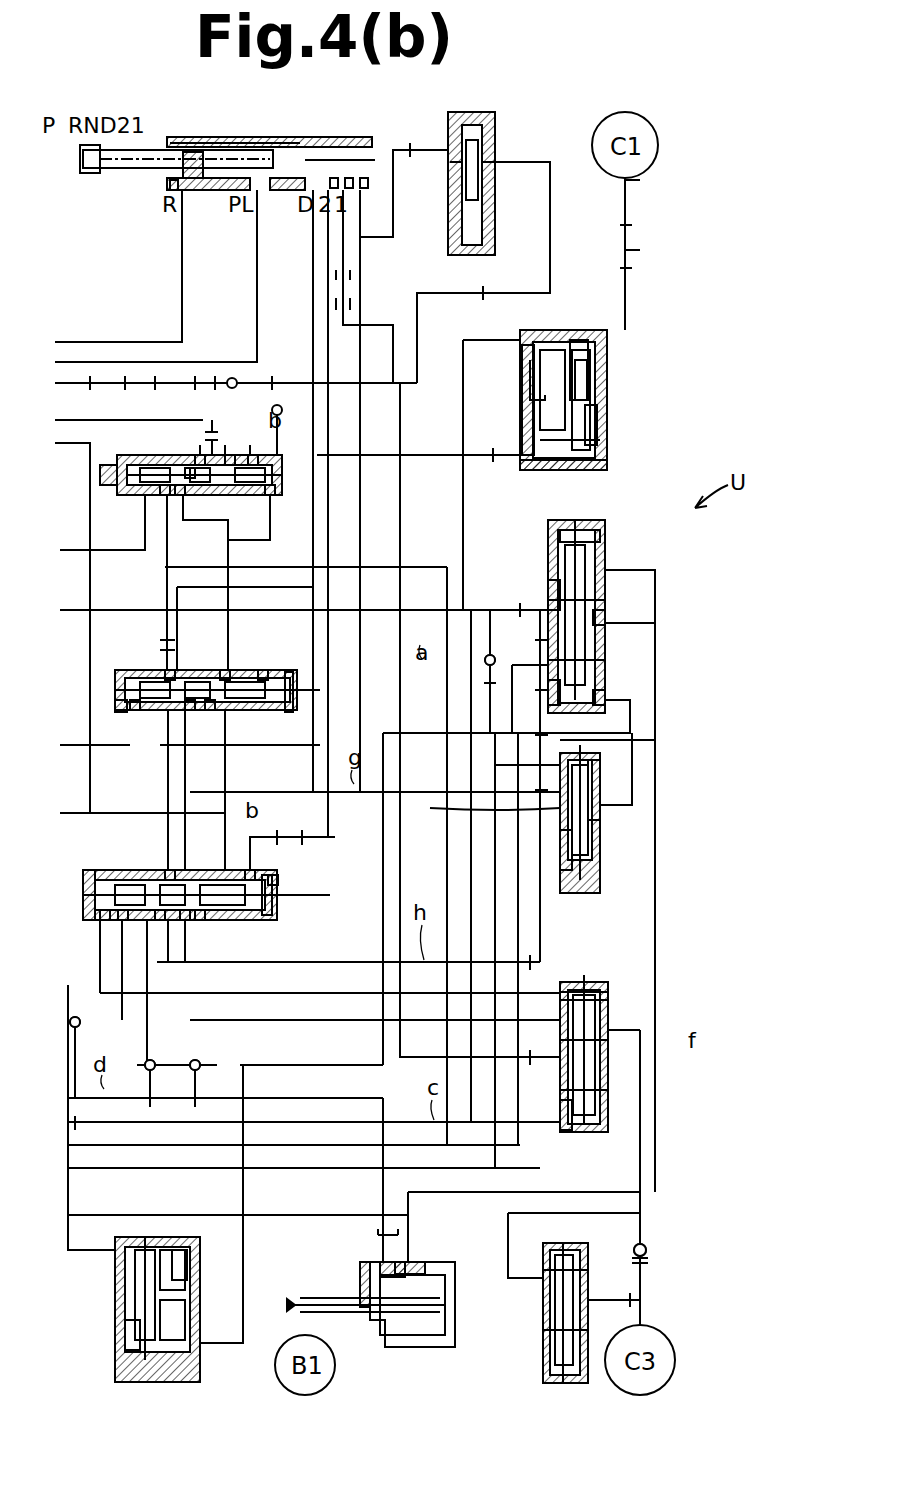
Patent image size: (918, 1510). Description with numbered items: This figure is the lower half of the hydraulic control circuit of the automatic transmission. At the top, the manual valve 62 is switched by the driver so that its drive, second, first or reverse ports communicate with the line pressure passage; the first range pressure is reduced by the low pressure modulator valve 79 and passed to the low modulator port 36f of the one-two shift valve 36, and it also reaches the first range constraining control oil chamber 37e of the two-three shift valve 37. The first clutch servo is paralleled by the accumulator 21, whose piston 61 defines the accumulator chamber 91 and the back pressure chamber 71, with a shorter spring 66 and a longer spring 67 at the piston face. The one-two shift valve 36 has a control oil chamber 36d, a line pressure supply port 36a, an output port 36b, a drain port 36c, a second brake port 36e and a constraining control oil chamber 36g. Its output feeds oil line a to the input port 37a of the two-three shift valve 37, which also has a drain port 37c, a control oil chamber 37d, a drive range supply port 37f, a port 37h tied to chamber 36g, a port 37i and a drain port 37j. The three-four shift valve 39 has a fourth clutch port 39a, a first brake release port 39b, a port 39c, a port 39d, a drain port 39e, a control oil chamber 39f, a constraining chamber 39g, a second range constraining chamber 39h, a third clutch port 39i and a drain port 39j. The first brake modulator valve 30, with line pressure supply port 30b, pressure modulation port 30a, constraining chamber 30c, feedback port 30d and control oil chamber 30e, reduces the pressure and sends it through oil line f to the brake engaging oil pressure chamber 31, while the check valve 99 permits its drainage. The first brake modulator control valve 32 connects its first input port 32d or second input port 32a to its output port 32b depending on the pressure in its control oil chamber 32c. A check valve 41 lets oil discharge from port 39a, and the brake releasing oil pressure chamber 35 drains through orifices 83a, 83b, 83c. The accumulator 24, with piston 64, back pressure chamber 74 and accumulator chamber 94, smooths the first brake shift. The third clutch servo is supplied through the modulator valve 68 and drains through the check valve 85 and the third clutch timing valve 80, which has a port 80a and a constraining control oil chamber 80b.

The manual valve 62 is at (268, 137).
The low pressure modulator valve 79 is at (495, 115).
The accumulator 21 is at (582, 330).
The back pressure chamber 71 is at (580, 350).
The shorter spring 66 is at (540, 378).
The longer spring 67 is at (590, 380).
The accumulator chamber 91 is at (540, 418).
The piston 61 is at (598, 400).
The 1-2 shift valve 36 is at (280, 455).
The line pressure supply port 36a is at (165, 495).
The output port 36b is at (180, 495).
The drain port 36c is at (190, 458).
The control oil chamber 36d is at (140, 505).
The B2 port 36e is at (228, 455).
The low modulator port 36f is at (252, 455).
The constraining control oil chamber 36g is at (270, 495).
The B1 modulator valve 30 is at (598, 520).
The pressure modulation port 30a is at (605, 618).
The line pressure supply port 30b is at (548, 605).
The constraining control oil chamber 30c is at (605, 700).
The feedback port 30d is at (605, 565).
The control oil chamber 30e is at (548, 695).
The check valve 99 is at (495, 658).
The B1 modulator control valve 32 is at (588, 893).
The second input port 32a is at (560, 870).
The output port 32b is at (600, 810).
The control oil chamber 32c is at (655, 748).
The first input port 32d is at (432, 808).
The 2-3 shift valve 37 is at (300, 690).
The input port 37a is at (225, 670).
The drain port 37c is at (210, 712).
The control oil chamber 37d is at (125, 712).
The 1st range constraining control oil chamber 37e is at (262, 670).
The D range line pressure supply port 37f is at (165, 670).
The port 37h is at (168, 672).
The port 37i is at (188, 712).
The drain port 37j is at (130, 712).
The 3-4 shift valve 39 is at (278, 900).
The C0 port 39a is at (110, 922).
The B1 release port 39b is at (122, 925).
The port 39c is at (160, 925).
The port 39d is at (170, 870).
The drain port 39e is at (98, 965).
The control oil chamber 39f is at (95, 872).
The constraining control oil chamber 39g is at (250, 870).
The 2nd range constraining control oil chamber 39h is at (275, 880).
The C3 port 39i is at (185, 925).
The drain port 39j is at (200, 925).
The check valve 41 is at (72, 1027).
The orifice 83a is at (150, 1060).
The orifice 83b is at (150, 1105).
The orifice 83c is at (195, 1105).
The C3 timing valve 80 is at (608, 1003).
The port 80a is at (608, 985).
The constraining control oil chamber 80b is at (560, 1120).
The accumulator 24 is at (115, 1300).
The back pressure chamber 74 is at (165, 1265).
The piston 64 is at (130, 1335).
The accumulator chamber 94 is at (165, 1322).
The brake engaging oil pressure chamber 31 is at (410, 1260).
The brake releasing oil pressure chamber 35 is at (385, 1265).
The modulator valve 68 is at (588, 1248).
The check valve 85 is at (648, 1250).